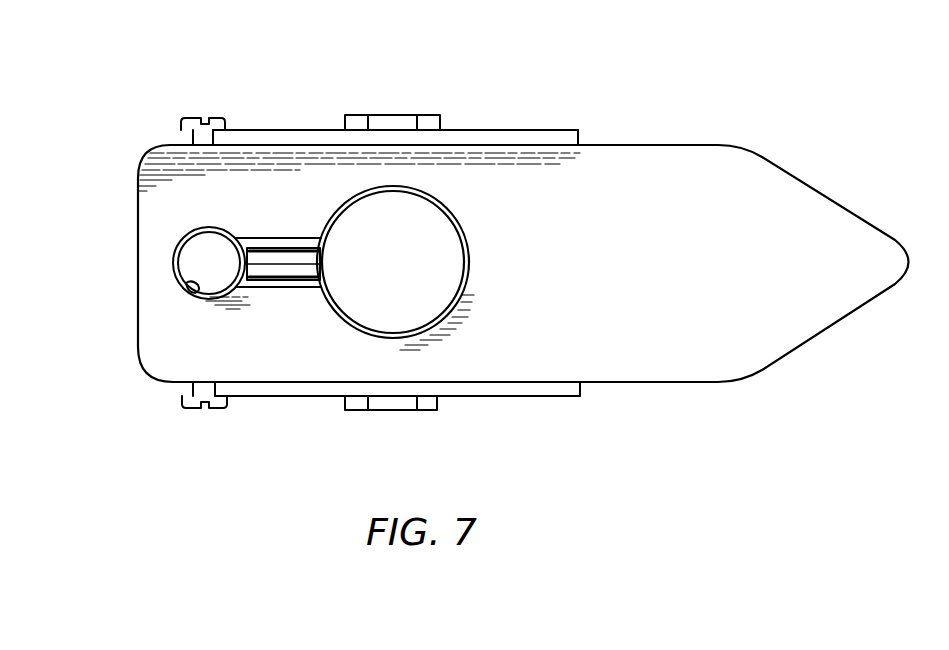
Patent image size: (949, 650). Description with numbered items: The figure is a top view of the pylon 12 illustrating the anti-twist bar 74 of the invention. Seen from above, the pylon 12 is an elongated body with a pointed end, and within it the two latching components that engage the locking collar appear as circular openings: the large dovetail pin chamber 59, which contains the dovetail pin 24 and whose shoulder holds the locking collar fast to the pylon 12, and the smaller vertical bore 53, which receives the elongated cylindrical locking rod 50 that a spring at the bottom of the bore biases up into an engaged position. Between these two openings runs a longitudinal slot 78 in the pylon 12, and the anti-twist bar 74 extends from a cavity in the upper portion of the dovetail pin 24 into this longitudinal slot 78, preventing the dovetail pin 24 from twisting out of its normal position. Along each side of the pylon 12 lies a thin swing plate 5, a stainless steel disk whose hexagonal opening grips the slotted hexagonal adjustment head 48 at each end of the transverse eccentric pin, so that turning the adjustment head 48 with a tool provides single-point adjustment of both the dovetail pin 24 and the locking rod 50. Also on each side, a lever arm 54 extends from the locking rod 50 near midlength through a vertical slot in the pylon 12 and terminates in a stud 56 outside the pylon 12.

The pylon 12 is at (748, 291).
The swing plate 5 is at (560, 130).
The adjustment head 48 is at (410, 113).
The lever arm 54 is at (192, 140).
The stud 56 is at (220, 120).
The locking rod 50 is at (215, 240).
The vertical bore 53 is at (193, 297).
The dovetail pin chamber 59 is at (460, 236).
The dovetail pin 24 is at (455, 282).
The longitudinal slot 78 is at (293, 243).
The anti-twist bar 74 is at (282, 267).